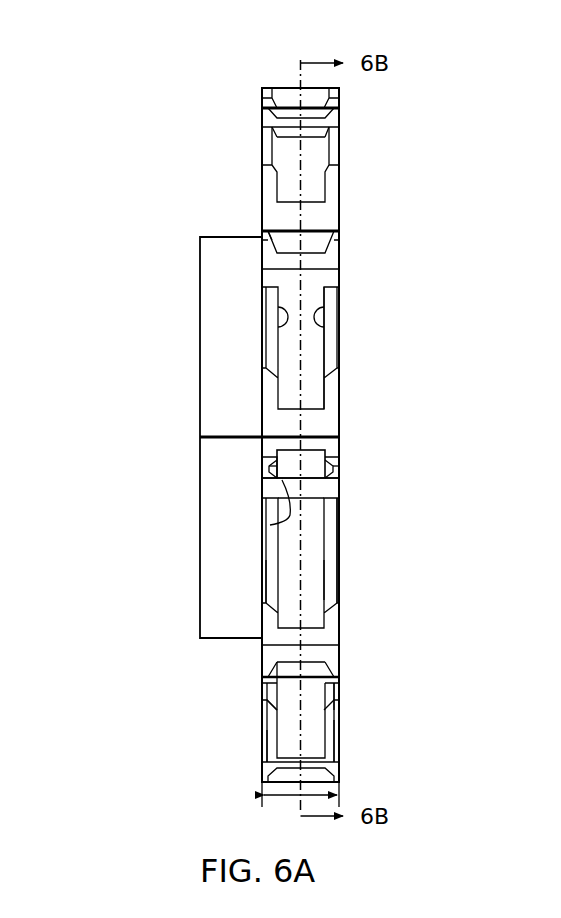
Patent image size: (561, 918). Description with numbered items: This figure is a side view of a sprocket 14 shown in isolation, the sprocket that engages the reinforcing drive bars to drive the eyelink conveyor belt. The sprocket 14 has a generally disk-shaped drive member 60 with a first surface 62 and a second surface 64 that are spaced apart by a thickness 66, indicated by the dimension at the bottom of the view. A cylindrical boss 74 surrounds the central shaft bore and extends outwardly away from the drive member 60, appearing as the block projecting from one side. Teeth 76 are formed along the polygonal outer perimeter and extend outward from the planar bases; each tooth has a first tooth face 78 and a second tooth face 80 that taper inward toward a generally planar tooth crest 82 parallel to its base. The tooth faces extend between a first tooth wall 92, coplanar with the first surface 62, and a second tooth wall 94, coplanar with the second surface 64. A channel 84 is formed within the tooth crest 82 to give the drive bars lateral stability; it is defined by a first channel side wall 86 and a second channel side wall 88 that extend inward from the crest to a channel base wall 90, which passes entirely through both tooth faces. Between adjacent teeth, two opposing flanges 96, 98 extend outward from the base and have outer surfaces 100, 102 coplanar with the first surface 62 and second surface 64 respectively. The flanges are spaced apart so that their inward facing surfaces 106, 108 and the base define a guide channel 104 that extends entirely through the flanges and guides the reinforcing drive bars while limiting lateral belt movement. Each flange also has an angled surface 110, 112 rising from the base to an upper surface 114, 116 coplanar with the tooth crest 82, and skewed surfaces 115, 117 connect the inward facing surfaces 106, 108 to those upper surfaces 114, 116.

The sprocket 14 is at (395, 199).
The drive member 60 is at (339, 405).
The first surface 62 is at (339, 622).
The second surface 64 is at (262, 701).
The thickness 66 is at (293, 800).
The cylindrical boss 74 is at (200, 292).
The teeth 76 is at (333, 107).
The first tooth face 78 is at (268, 446).
The second tooth face 80 is at (268, 478).
The tooth crest 82 is at (266, 463).
The channel 84 is at (293, 106).
The first channel side wall 86 is at (331, 466).
The second channel side wall 88 is at (270, 525).
The channel base wall 90 is at (339, 488).
The first tooth wall 92 is at (339, 253).
The second tooth wall 94 is at (262, 247).
The flange 96 is at (339, 530).
The flange 98 is at (268, 555).
The outer surface 100 is at (339, 556).
The outer surface 102 is at (268, 583).
The guide channel 104 is at (318, 575).
The inward facing surface 106 is at (337, 302).
The inward facing surface 108 is at (267, 305).
The angled surface 110 is at (334, 694).
The angled surface 112 is at (268, 704).
The upper surface 114 is at (334, 328).
The skewed surface 115 is at (268, 738).
The upper surface 116 is at (268, 333).
The skewed surface 117 is at (333, 735).